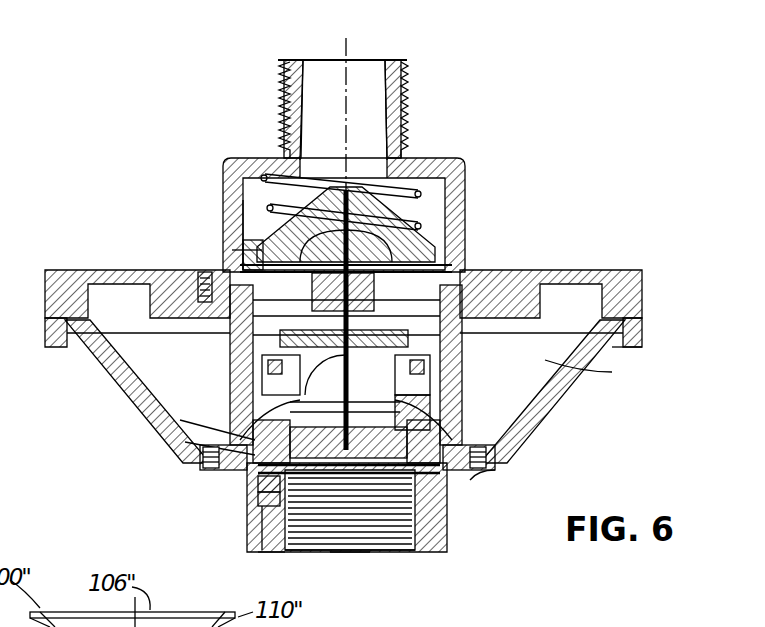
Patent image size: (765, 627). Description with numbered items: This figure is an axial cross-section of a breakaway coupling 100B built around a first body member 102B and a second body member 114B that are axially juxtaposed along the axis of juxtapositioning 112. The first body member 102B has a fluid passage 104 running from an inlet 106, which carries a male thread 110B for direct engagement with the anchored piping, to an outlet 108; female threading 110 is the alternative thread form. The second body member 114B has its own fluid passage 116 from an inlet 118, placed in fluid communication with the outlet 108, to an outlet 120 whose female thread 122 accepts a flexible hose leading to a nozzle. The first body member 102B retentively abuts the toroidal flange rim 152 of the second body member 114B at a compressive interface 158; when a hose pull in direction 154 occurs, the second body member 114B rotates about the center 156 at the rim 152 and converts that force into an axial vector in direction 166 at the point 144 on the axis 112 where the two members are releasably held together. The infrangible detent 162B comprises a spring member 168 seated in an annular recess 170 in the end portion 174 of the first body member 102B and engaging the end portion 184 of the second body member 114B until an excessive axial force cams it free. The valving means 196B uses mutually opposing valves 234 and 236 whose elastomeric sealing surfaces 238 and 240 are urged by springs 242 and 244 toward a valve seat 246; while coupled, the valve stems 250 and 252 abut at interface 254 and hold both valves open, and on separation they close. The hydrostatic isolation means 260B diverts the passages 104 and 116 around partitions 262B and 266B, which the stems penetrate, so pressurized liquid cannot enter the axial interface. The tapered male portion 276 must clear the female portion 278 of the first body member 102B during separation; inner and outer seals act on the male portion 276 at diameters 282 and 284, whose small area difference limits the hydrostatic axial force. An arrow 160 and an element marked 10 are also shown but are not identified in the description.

The valve stem 10 is at (218, 398).
The pressure regulator 100B is at (520, 96).
The first body member 102B is at (434, 158).
The fluid passage 104 is at (375, 114).
The inlet 106 is at (316, 60).
The outlet 108 is at (462, 338).
The female threading 110 is at (470, 398).
The male thread 110B is at (410, 92).
The axis of juxtapositioning 112 is at (350, 556).
The second body member 114B is at (447, 535).
The fluid passage 116 is at (245, 470).
The inlet 118 is at (462, 352).
The outlet 120 is at (322, 556).
The female thread 122 is at (282, 556).
The point 144 is at (460, 475).
The toroidal flange rim 152 is at (626, 270).
The direction 154 is at (500, 598).
The center 156 is at (612, 372).
The compressive interface 158 is at (628, 345).
The outlet region 160 is at (382, 597).
The infrangible detent means 162B is at (540, 404).
The direction 166 is at (350, 572).
The spring member 168 is at (478, 360).
The annular recess 170 is at (470, 384).
The end portion 174 is at (262, 372).
The end portion 184 is at (262, 385).
The valving means 196B is at (552, 180).
The valve 234 is at (455, 192).
The valve 236 is at (264, 498).
The sealing surface 238 is at (450, 240).
The sealing surface 240 is at (262, 484).
The spring 242 is at (262, 158).
The spring 244 is at (266, 514).
The valve seat 246 is at (458, 258).
The valve stem 250 is at (452, 215).
The valve stem 252 is at (258, 472).
The interface 254 is at (250, 262).
The hydrostatic isolation means 260B is at (256, 208).
The partition 262B is at (258, 248).
The partition 266B is at (204, 272).
The male portion 276 is at (180, 420).
The female portion 278 is at (185, 442).
The diameter 282 is at (240, 333).
The diameter 284 is at (240, 366).